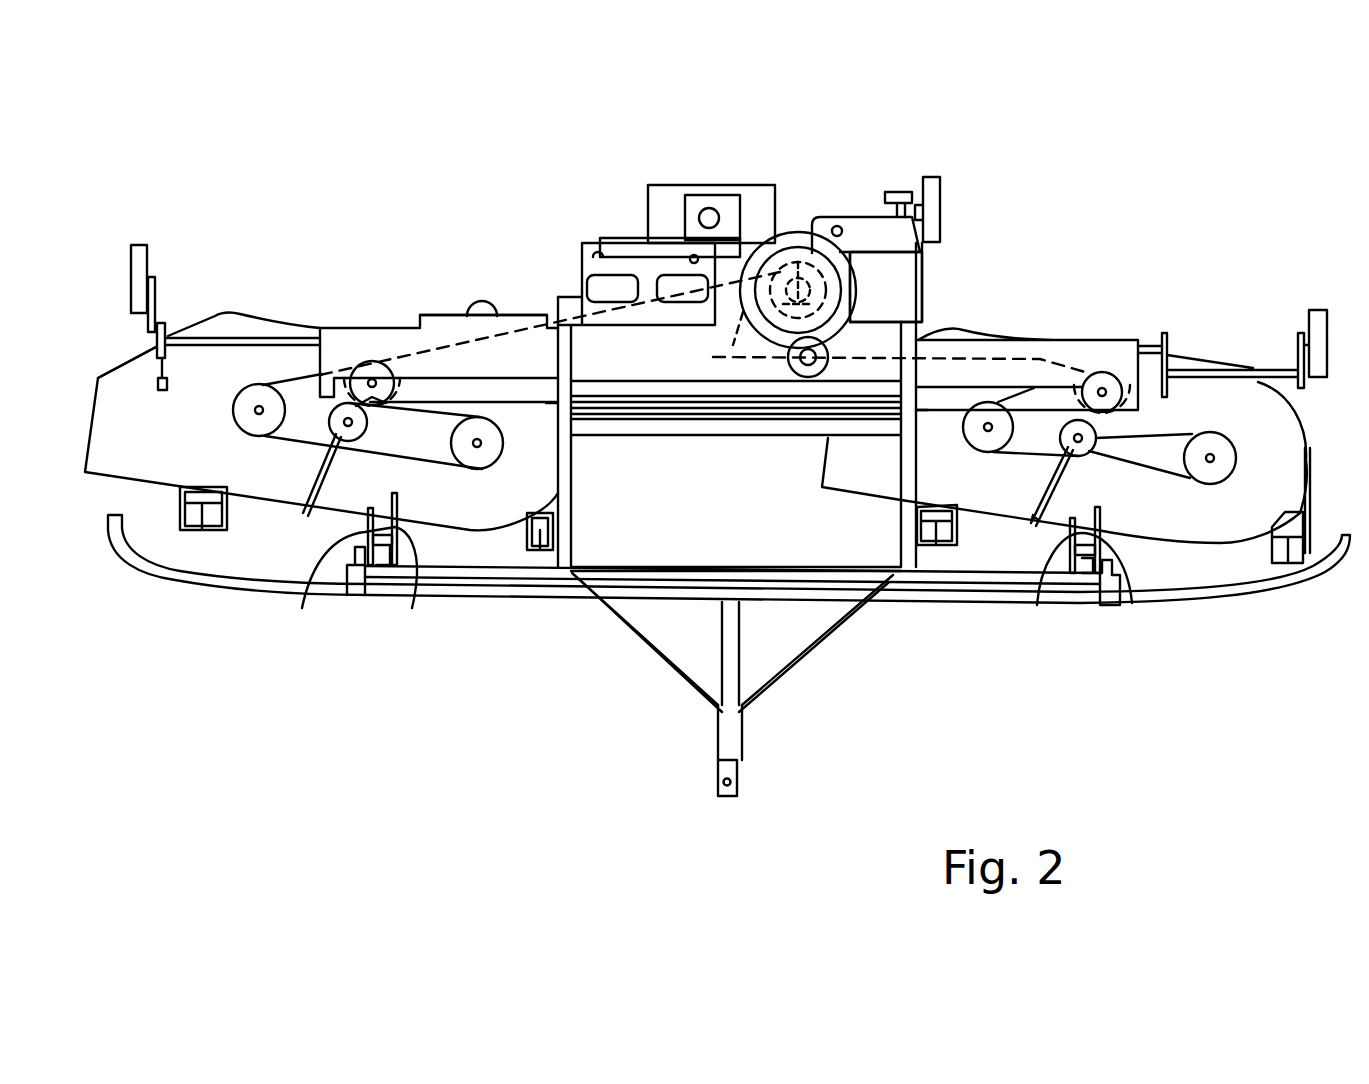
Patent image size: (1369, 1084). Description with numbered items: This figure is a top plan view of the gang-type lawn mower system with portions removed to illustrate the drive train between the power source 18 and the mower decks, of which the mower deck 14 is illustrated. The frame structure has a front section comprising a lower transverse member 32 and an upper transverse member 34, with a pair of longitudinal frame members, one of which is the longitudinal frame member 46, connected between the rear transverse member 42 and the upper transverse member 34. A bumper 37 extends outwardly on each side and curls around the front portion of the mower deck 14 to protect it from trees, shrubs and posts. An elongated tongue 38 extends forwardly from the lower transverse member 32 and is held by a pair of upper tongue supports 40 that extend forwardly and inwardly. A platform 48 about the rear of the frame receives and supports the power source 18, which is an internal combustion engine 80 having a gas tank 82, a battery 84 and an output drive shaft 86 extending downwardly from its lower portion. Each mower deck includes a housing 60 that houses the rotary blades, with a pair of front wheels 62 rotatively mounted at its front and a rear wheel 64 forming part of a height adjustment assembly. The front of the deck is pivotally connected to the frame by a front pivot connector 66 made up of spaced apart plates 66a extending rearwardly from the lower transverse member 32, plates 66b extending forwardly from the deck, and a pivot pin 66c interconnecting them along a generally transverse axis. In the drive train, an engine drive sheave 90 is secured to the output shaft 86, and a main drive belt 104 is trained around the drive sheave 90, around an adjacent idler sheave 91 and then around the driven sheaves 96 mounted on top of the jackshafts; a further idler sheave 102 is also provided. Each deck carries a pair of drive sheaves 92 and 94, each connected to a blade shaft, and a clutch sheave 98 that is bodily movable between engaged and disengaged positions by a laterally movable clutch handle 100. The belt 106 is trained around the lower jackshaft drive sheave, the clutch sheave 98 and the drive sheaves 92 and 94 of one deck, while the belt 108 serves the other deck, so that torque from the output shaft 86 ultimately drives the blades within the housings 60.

The mower deck 14 is at (108, 512).
The power source 18 is at (872, 190).
The lower transverse member 32 is at (926, 600).
The upper transverse member 34 is at (682, 568).
The bumper 37 is at (190, 584).
The tongue 38 is at (741, 623).
The upper tongue supports 40 is at (636, 633).
The rear transverse member 42 is at (1029, 360).
The longitudinal frame member 46 is at (571, 508).
The platform 48 is at (904, 280).
The housing 60 is at (207, 395).
The front wheels 62 is at (192, 527).
The rear wheel 64 is at (143, 257).
The front pivot connector 66 is at (330, 541).
The plates 66a is at (371, 565).
The plates 66b is at (412, 608).
The pivot pin 66c is at (302, 608).
The internal combustion engine 80 is at (833, 282).
The gas tank 82 is at (667, 200).
The battery 84 is at (627, 270).
The output drive shaft 86 is at (802, 252).
The engine drive sheave 90 is at (840, 307).
The idler sheave 91 is at (707, 347).
The drive sheave 92 is at (481, 460).
The drive sheave 94 is at (244, 405).
The driven sheave 96 is at (378, 383).
The clutch sheave 98 is at (392, 437).
The clutch handle 100 is at (317, 477).
The idler sheave 102 is at (483, 305).
The drive belt 104 is at (427, 397).
The belt 106 is at (1163, 473).
The belt 108 is at (290, 385).